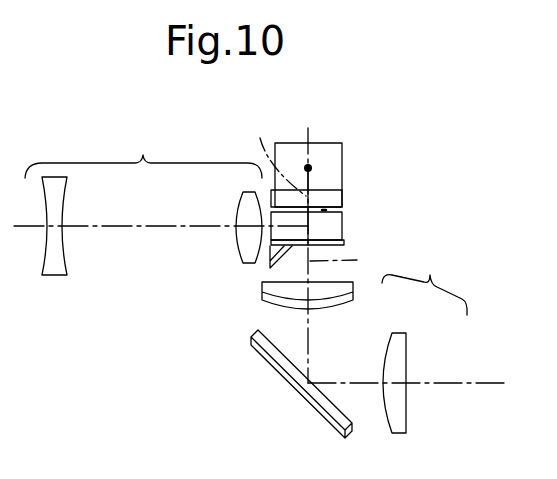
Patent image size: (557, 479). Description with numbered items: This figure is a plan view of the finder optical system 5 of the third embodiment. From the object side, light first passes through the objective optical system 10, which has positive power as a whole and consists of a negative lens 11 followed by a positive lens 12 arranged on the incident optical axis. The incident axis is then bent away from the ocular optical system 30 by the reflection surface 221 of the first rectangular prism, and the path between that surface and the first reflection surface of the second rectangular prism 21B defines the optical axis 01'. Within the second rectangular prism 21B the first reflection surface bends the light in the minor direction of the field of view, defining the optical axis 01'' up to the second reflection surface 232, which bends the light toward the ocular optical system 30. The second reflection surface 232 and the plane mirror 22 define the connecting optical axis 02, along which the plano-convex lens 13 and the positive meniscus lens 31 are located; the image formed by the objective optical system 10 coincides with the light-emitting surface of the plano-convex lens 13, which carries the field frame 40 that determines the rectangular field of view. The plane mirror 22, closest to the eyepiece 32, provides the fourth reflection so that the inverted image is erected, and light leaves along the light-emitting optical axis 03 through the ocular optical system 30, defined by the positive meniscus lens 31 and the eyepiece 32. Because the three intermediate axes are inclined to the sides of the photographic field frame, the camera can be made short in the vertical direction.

The finder optical system 5 is at (92, 137).
The objective optical system 10 is at (143, 154).
The negative lens 11 is at (56, 198).
The positive lens 12 is at (243, 205).
The plano-convex lens 13 is at (333, 220).
The field frame 40 is at (333, 243).
The reflection surface 221 is at (273, 268).
The second rectangular prism 21B is at (323, 146).
The second reflection surface 232 is at (333, 176).
The optical axis 01' is at (276, 155).
The optical axis 01'' is at (314, 244).
The connecting optical axis 02 is at (348, 260).
The light-emitting optical axis 03 is at (472, 382).
The ocular optical system 30 is at (424, 283).
The positive meniscus lens 31 is at (350, 287).
The eyepiece 32 is at (398, 366).
The plane mirror 22 is at (273, 358).